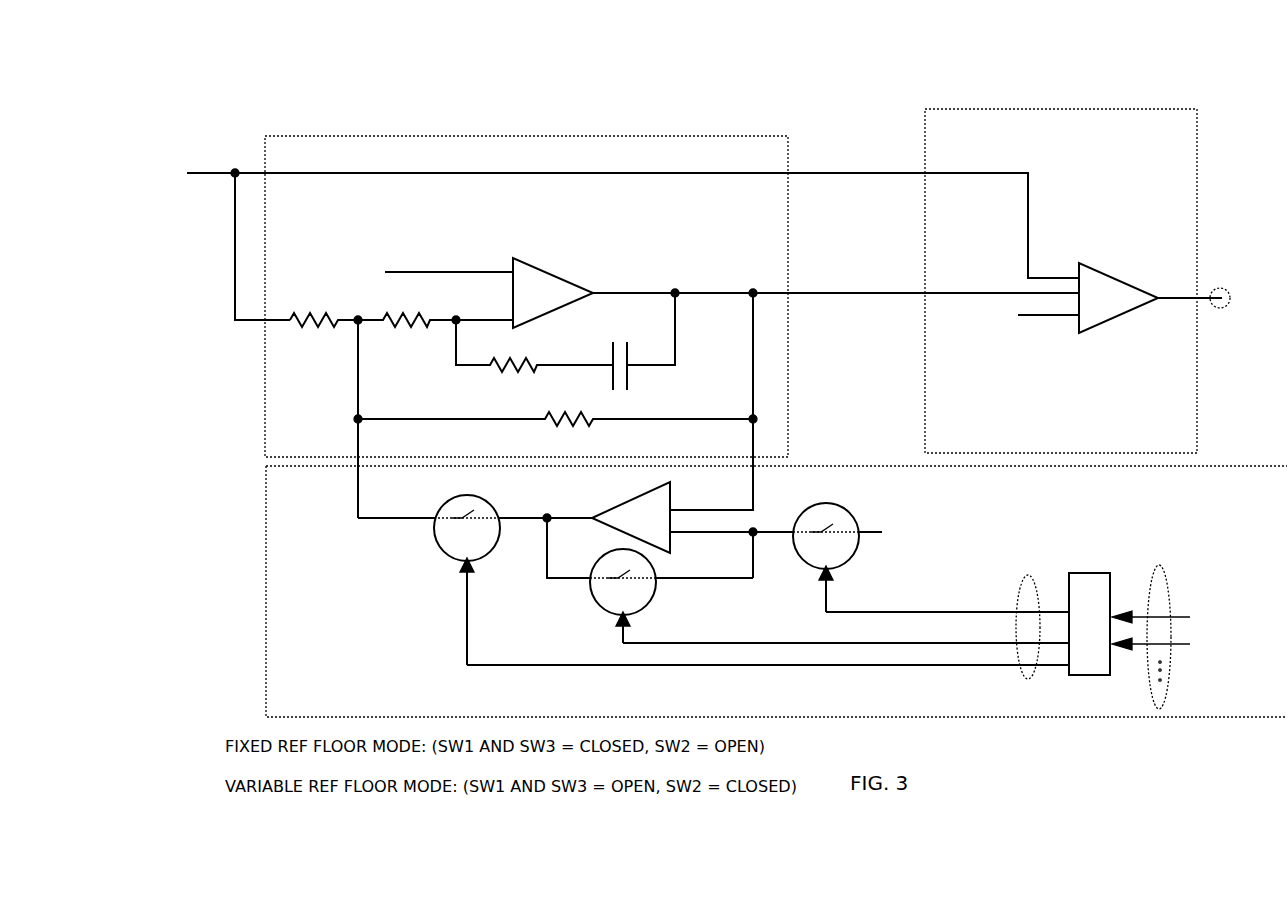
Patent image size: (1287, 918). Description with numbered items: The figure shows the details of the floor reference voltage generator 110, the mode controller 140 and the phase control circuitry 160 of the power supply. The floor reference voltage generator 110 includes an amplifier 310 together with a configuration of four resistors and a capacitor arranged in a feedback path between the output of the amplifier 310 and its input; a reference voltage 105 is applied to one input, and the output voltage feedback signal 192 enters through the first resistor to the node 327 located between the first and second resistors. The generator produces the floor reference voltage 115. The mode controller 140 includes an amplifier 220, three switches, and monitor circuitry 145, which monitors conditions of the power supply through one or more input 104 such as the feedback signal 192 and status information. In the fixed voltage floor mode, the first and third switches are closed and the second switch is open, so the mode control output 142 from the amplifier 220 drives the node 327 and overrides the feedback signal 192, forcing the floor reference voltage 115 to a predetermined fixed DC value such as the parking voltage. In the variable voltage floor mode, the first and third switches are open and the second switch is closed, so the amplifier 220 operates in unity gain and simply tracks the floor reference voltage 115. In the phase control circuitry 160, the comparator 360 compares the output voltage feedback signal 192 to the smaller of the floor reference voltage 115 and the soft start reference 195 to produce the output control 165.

The output voltage feedback signal 192 is at (214, 156).
The floor reference voltage generator 110 is at (458, 126).
The mode controller 140 is at (836, 80).
The phase control circuitry 160 is at (1052, 108).
The reference voltage Vref 105 is at (457, 266).
The node 327 is at (356, 314).
The amplifier 310 is at (716, 385).
The floor reference voltage 115 is at (982, 280).
The comparator 360 is at (1131, 288).
The output control 165 is at (1204, 284).
The soft start reference 195 is at (1052, 320).
The amplifier 220 is at (713, 570).
The mode control output 142 is at (1028, 576).
The input 104 is at (1158, 566).
The monitor circuitry 145 is at (1089, 678).